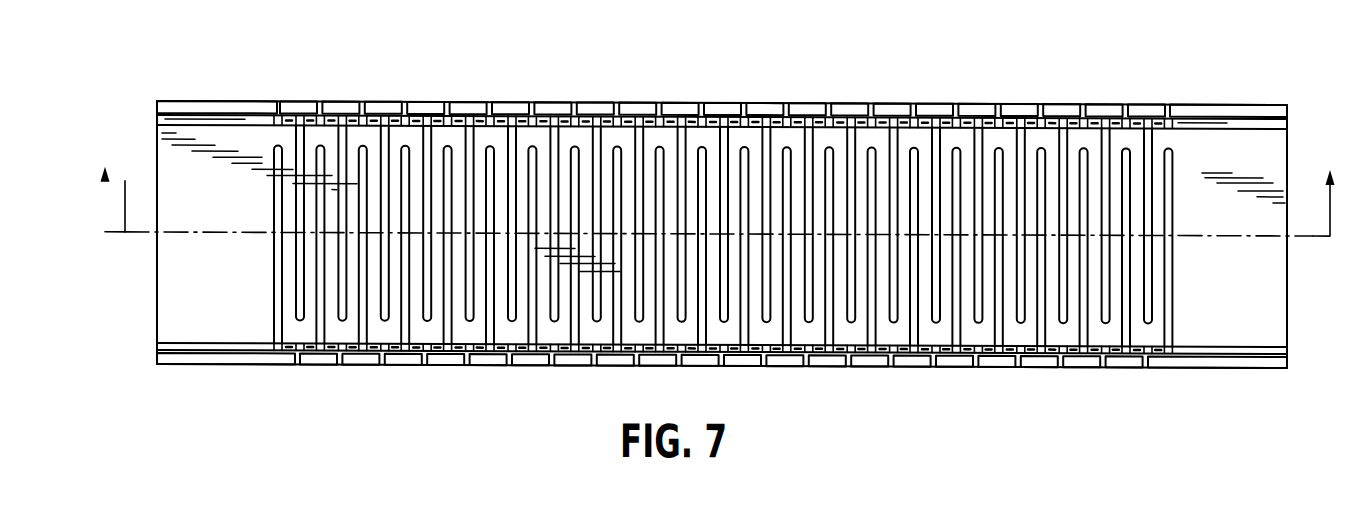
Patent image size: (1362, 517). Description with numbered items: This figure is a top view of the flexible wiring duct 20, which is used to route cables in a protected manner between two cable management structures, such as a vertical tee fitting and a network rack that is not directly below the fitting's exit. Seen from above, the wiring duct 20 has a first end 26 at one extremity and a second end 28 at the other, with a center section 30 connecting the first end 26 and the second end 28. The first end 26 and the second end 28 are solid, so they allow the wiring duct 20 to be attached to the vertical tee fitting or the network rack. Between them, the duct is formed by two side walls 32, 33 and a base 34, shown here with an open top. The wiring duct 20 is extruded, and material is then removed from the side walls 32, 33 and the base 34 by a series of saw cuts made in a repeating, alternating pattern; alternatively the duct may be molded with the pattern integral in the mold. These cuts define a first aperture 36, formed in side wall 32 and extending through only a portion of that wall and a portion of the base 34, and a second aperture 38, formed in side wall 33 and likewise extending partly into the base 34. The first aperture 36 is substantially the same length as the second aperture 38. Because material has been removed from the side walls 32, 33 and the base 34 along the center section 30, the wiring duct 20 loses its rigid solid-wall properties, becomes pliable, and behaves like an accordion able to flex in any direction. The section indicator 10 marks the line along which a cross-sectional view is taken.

The section line 10 is at (720, 185).
The wiring duct 20 is at (416, 74).
The first end 26 is at (1233, 293).
The second end 28 is at (198, 283).
The center section 30 is at (872, 364).
The side wall 32 is at (512, 100).
The side wall 33 is at (490, 361).
The base 34 is at (901, 172).
The first aperture 36 is at (1062, 145).
The second aperture 38 is at (1043, 322).